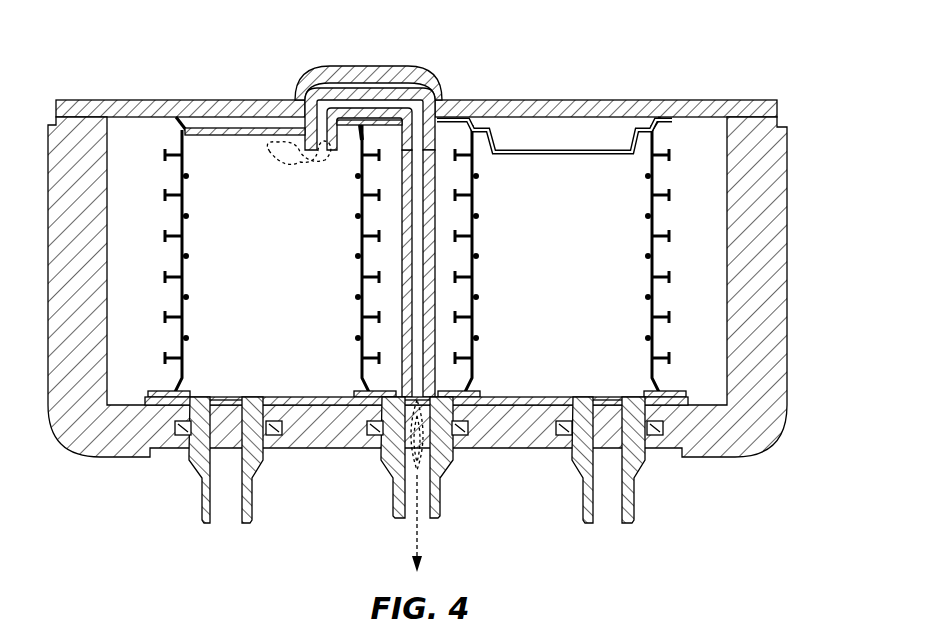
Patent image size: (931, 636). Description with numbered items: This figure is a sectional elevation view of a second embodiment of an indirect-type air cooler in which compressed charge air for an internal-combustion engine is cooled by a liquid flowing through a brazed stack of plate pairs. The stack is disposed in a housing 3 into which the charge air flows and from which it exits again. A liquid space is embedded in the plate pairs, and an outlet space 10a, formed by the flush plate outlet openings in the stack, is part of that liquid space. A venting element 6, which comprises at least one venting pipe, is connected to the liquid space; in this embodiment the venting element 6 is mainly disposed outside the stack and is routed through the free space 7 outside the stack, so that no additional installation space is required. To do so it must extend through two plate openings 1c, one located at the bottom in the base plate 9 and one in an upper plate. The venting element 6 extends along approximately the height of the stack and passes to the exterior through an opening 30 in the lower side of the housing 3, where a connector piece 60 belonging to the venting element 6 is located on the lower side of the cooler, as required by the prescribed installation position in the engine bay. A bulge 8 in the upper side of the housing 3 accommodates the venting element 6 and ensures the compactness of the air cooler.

The housing 3 is at (685, 100).
The bulge 8 is at (322, 70).
The venting element 6 is at (437, 99).
The free space 7 is at (445, 217).
The plate opening 1c is at (357, 128).
The outlet space 10a is at (233, 196).
The base plate 9 is at (320, 407).
The opening 30 is at (380, 438).
The connector piece 60 is at (435, 483).